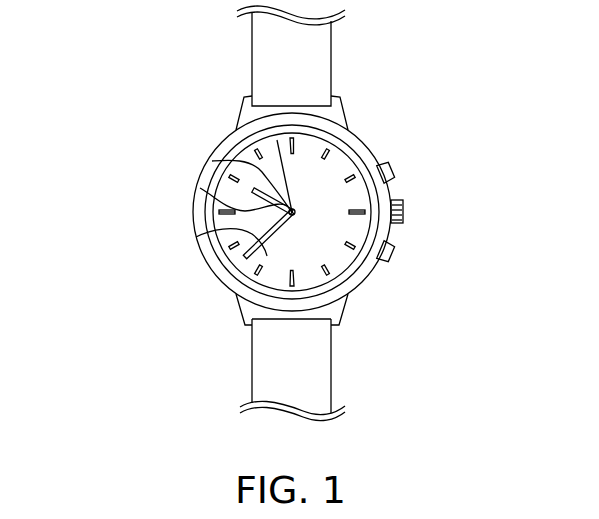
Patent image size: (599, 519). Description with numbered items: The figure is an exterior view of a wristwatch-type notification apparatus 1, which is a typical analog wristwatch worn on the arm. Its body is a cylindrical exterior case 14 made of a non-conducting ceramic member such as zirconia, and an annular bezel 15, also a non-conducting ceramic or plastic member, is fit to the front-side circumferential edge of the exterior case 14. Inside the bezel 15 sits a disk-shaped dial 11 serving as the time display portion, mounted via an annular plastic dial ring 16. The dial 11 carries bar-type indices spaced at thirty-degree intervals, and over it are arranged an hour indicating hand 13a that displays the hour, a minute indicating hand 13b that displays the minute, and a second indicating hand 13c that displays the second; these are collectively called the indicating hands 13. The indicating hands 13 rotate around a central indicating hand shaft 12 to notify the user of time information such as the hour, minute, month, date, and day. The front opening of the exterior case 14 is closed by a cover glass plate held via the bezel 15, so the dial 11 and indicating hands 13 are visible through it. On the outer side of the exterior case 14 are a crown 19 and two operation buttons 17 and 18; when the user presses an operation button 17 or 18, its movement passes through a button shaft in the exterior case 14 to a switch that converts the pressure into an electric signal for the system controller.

The wristwatch-type notification apparatus 1 is at (380, 88).
The dial 11 is at (332, 175).
The indicating hand shaft 12 is at (292, 212).
The indicating hands 13 is at (163, 190).
The hour indicating hand 13a is at (200, 188).
The minute indicating hand 13b is at (196, 237).
The second indicating hand 13c is at (212, 161).
The exterior case 14 is at (208, 239).
The bezel 15 is at (218, 275).
The dial ring 16 is at (234, 147).
The operation button 17 is at (397, 169).
The operation button 18 is at (397, 252).
The crown 19 is at (403, 210).